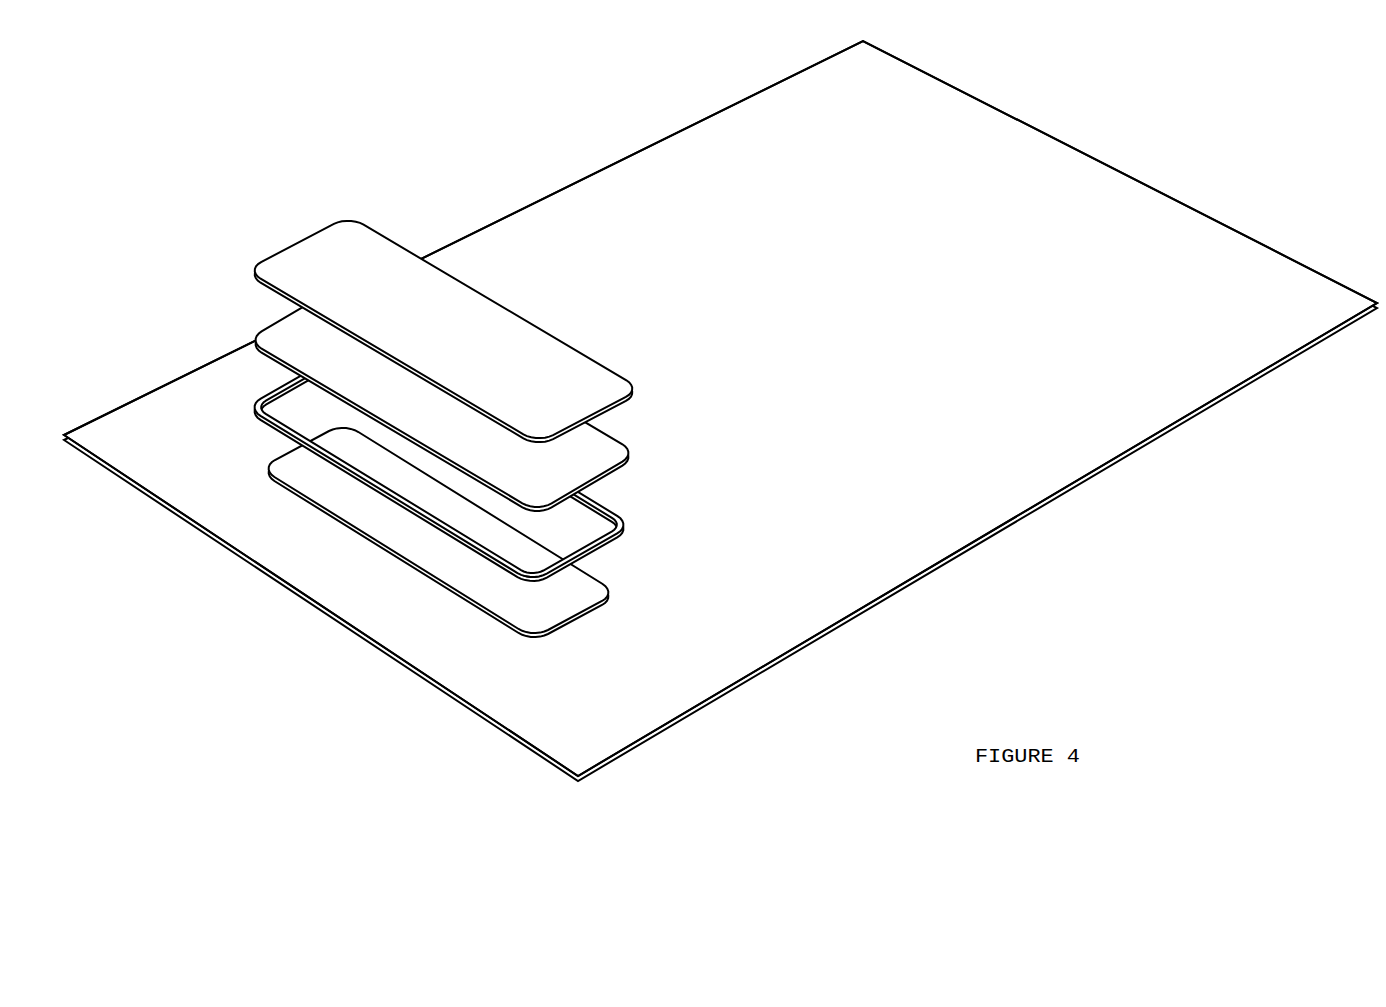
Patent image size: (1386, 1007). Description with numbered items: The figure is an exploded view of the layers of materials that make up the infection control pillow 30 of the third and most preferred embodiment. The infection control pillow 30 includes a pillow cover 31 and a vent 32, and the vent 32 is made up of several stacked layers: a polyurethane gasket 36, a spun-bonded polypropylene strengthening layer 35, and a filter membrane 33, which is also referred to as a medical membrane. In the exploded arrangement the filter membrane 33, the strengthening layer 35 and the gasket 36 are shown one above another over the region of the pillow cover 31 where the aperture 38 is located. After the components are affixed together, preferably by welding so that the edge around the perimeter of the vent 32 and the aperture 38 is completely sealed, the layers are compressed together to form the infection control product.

The infection control pillow 30 is at (1162, 472).
The pillow cover 31 is at (922, 565).
The vent 32 is at (400, 438).
The filter membrane 33 is at (612, 381).
The spun-bonded polypropylene strengthening layer 35 is at (612, 453).
The polyurethane gasket 36 is at (618, 527).
The aperture 38 is at (562, 608).